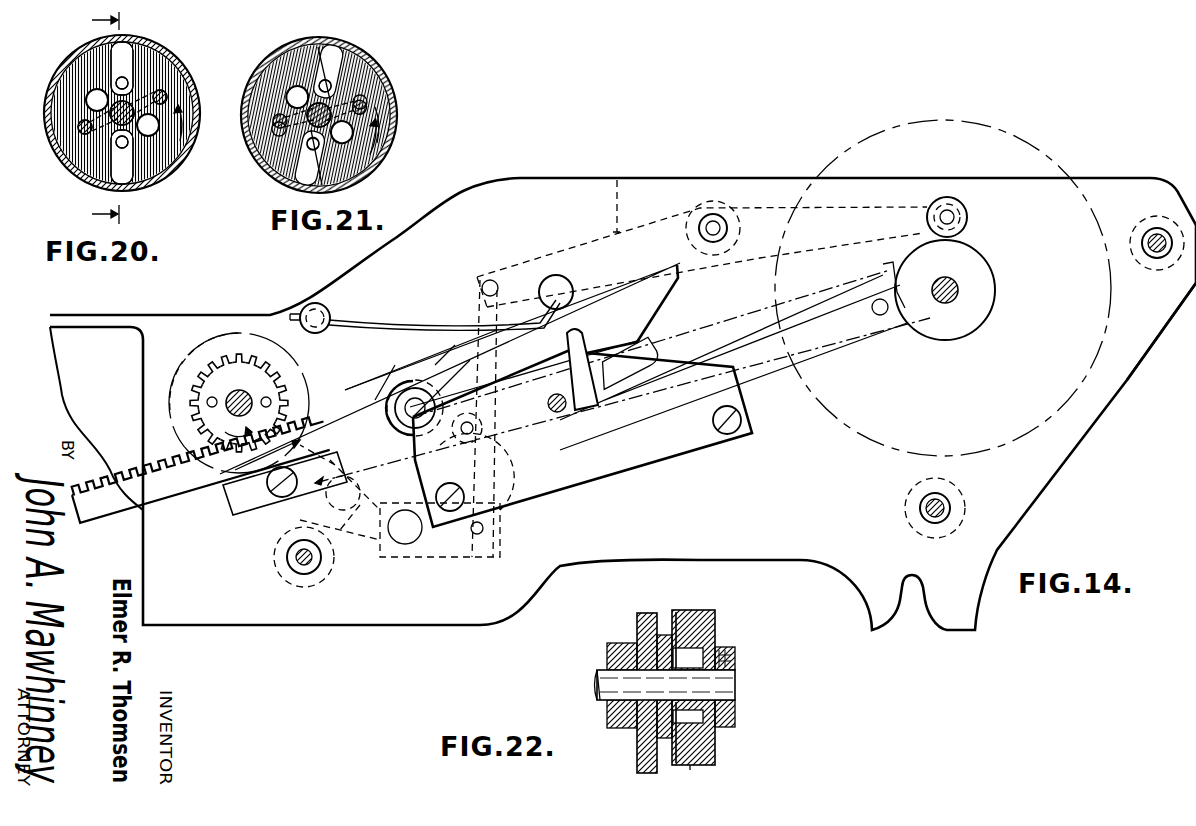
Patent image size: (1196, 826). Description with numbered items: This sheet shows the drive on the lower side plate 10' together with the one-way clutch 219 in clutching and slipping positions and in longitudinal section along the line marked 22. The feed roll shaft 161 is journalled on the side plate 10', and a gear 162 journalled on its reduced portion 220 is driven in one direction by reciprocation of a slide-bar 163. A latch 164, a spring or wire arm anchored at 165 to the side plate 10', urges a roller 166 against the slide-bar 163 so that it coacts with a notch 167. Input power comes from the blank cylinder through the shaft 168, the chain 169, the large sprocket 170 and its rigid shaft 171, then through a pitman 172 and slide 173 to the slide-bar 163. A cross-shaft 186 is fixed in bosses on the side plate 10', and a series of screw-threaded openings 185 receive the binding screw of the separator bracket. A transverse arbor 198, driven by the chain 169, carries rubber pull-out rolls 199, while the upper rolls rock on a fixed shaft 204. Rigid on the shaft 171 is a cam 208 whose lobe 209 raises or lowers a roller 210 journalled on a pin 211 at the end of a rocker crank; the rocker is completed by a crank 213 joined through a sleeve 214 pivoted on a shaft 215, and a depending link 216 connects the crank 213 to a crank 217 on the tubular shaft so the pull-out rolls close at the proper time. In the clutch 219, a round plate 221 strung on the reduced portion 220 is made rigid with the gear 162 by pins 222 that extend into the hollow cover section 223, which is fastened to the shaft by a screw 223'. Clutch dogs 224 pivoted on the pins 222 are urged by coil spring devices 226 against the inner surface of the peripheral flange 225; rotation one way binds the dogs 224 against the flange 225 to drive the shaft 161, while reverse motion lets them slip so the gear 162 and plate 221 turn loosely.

In FIG. 14, the side plate 10' is at (623, 386).
In FIG. 22, the side plate 10' is at (618, 695).
In FIG. 20, the section line 22- 22 is at (88, 119).
In FIG. 14, the transverse shaft 161 is at (252, 392).
In FIG. 22, the transverse shaft 161 is at (612, 685).
In FIG. 14, the gear 162 is at (254, 386).
In FIG. 22, the gear 162 is at (662, 633).
In FIG. 14, the slide-bar 163 is at (398, 362).
In FIG. 14, the latch 164 is at (436, 320).
In FIG. 14, the anchor 165 is at (328, 308).
In FIG. 14, the roller 166 is at (556, 285).
In FIG. 14, the notch 167 is at (443, 362).
In FIG. 14, the shaft 168 is at (1158, 238).
In FIG. 14, the chain 169 is at (1128, 360).
In FIG. 14, the large sprocket 170 is at (900, 450).
In FIG. 14, the shaft 171 is at (955, 286).
In FIG. 14, the pitman 172 is at (730, 322).
In FIG. 14, the slide 173 is at (580, 400).
In FIG. 14, the screw-threaded openings 185 is at (294, 456).
In FIG. 14, the cross-shaft 186 is at (428, 385).
In FIG. 14, the transverse arbor 198 is at (302, 572).
In FIG. 14, the pull-out rolls 199 is at (350, 548).
In FIG. 14, the fixed shaft 204 is at (408, 535).
In FIG. 14, the cam 208 is at (978, 300).
In FIG. 14, the lobe 209 is at (885, 268).
In FIG. 14, the roller 210 is at (957, 206).
In FIG. 14, the pin 211 is at (955, 217).
In FIG. 14, the crank 213 is at (620, 180).
In FIG. 14, the sleeve 214 is at (688, 240).
In FIG. 14, the shaft 215 is at (718, 222).
In FIG. 14, the depending link 216 is at (510, 500).
In FIG. 14, the crank 217 is at (290, 513).
In FIG. 20, the one-way clutch 219 is at (158, 179).
In FIG. 21, the one-way clutch 219 is at (386, 166).
In FIG. 14, the one-way clutch 219 is at (233, 333).
In FIG. 22, the one-way clutch 219 is at (725, 736).
In FIG. 20, the reduced portion 220 is at (130, 104).
In FIG. 21, the reduced portion 220 is at (335, 112).
In FIG. 22, the reduced portion 220 is at (710, 686).
In FIG. 22, the disk or plate 221 is at (690, 766).
In FIG. 20, the pins 222 is at (120, 145).
In FIG. 21, the pins 222 is at (330, 90).
In FIG. 22, the pins 222 is at (690, 655).
In FIG. 14, the cover section 223 is at (194, 346).
In FIG. 22, the cover section 223 is at (703, 665).
In FIG. 22, the screw 223' is at (752, 684).
In FIG. 20, the clutch dogs 224 is at (125, 60).
In FIG. 21, the clutch dogs 224 is at (320, 60).
In FIG. 22, the clutch dogs 224 is at (705, 625).
In FIG. 21, the peripheral flange 225 is at (392, 143).
In FIG. 20, the coil spring devices 226 is at (162, 104).
In FIG. 21, the coil spring devices 226 is at (282, 118).